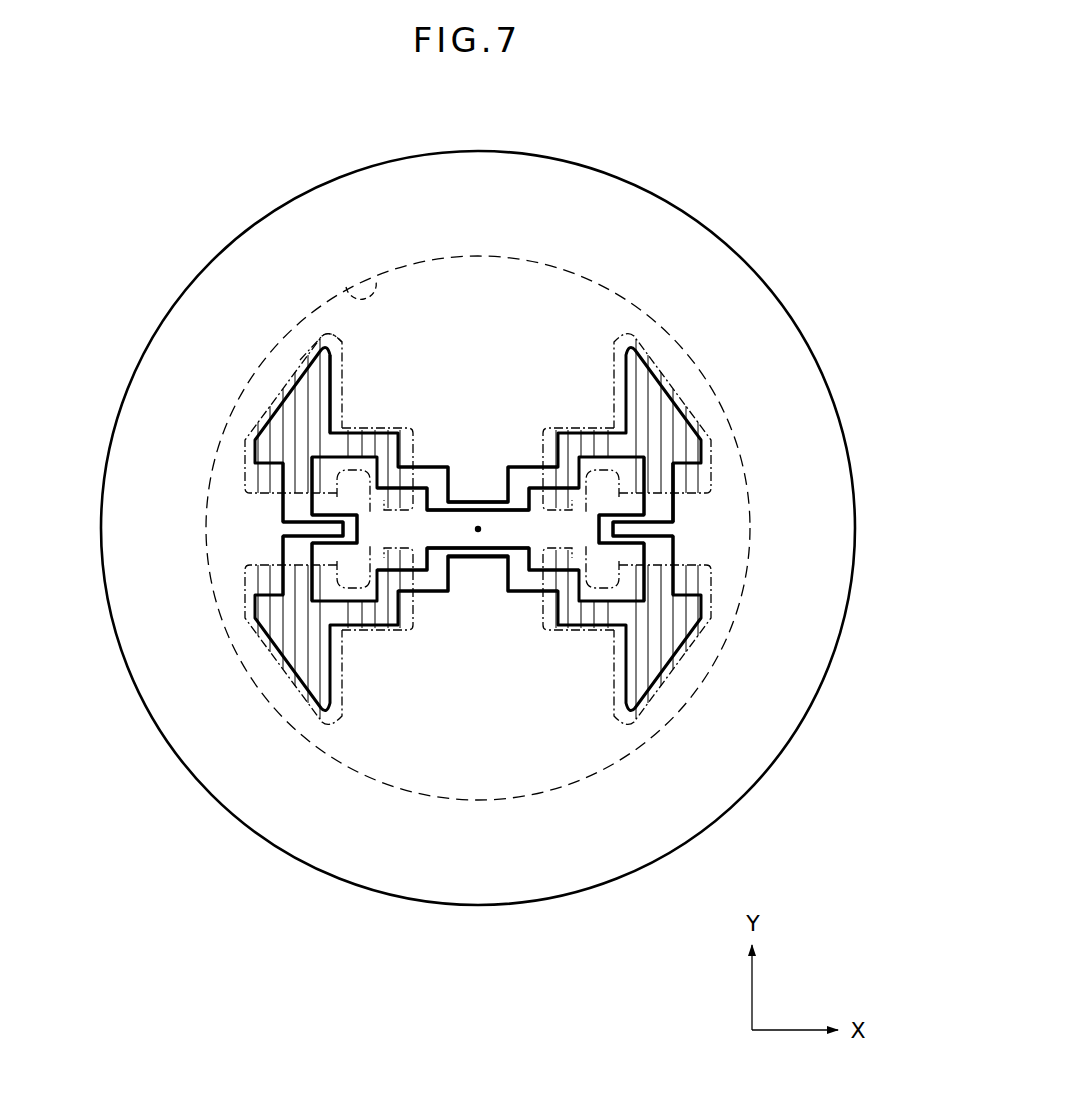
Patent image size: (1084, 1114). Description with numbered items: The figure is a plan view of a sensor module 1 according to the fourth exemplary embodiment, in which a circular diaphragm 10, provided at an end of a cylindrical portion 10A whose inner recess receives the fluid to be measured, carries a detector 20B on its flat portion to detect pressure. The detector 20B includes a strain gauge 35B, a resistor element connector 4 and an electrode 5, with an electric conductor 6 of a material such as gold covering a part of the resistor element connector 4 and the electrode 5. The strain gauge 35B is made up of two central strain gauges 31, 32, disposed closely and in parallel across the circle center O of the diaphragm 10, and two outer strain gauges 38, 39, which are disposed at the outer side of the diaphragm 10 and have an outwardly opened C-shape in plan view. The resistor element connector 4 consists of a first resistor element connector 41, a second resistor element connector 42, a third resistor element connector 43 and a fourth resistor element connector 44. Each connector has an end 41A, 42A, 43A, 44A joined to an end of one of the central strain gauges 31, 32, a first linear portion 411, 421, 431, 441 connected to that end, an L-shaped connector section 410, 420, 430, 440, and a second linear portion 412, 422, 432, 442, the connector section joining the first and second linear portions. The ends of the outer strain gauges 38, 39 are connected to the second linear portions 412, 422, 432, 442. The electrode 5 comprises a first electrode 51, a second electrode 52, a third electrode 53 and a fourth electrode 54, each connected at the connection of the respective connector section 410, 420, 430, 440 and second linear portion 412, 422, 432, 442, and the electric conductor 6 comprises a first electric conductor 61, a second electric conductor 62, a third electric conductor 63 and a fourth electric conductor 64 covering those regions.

The sensor module 1 is at (685, 123).
The diaphragm 10 is at (275, 228).
The cylindrical portion 10A is at (346, 287).
The detector 20B is at (569, 296).
The resistor element connector 4 is at (455, 355).
The electrode 5 is at (340, 376).
The electric conductor 6 is at (327, 319).
The central strain gauge 31 is at (480, 502).
The central strain gauge 32 is at (480, 557).
The outer strain gauge 38 is at (360, 522).
The outer strain gauge 39 is at (600, 531).
The strain gauge 35B is at (707, 528).
The first resistor element connector 41 is at (374, 425).
The second resistor element connector 42 is at (380, 635).
The third resistor element connector 43 is at (578, 635).
The fourth resistor element connector 44 is at (582, 425).
The connector section 410 is at (356, 442).
The connector section 420 is at (356, 613).
The connector section 430 is at (601, 613).
The connector section 440 is at (600, 442).
The first linear portion 411 is at (418, 478).
The first linear portion 421 is at (418, 580).
The first linear portion 431 is at (540, 580).
The first linear portion 441 is at (538, 478).
The end 41A is at (444, 490).
The end 42A is at (444, 568).
The end 43A is at (512, 568).
The end 44A is at (512, 490).
The second linear portion 412 is at (283, 506).
The second linear portion 422 is at (283, 552).
The second linear portion 432 is at (664, 549).
The second linear portion 442 is at (664, 507).
The first electrode 51 is at (276, 394).
The second electrode 52 is at (292, 687).
The third electrode 53 is at (677, 668).
The fourth electrode 54 is at (682, 372).
The first electric conductor 61 is at (344, 347).
The second electric conductor 62 is at (340, 728).
The third electric conductor 63 is at (615, 725).
The fourth electric conductor 64 is at (625, 325).
The circle center O is at (481, 530).